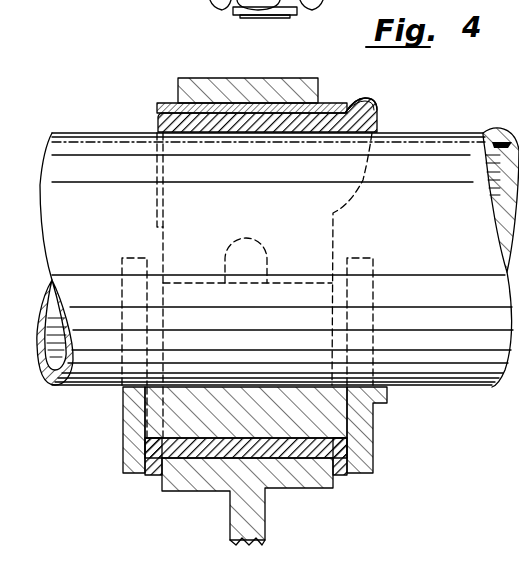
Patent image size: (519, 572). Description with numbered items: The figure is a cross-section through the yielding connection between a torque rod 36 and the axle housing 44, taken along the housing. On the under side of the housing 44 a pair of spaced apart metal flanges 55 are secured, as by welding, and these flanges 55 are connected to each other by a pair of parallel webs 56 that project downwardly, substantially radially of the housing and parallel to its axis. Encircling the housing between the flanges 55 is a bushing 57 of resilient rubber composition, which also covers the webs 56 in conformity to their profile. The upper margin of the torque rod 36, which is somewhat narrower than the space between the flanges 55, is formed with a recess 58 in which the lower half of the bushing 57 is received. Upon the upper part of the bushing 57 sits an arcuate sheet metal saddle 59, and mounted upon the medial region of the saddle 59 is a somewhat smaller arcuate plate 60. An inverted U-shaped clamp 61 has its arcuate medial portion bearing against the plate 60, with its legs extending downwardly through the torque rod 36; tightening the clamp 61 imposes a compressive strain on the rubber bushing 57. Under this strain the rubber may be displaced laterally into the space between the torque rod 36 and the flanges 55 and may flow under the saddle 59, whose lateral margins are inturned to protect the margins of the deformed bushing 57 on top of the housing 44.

The tube 44 is at (453, 133).
The metal flange 55 is at (122, 420).
The web 56 is at (316, 478).
The bushing 57 is at (155, 118).
The recess 58 is at (300, 440).
The saddle 59 is at (346, 106).
The arcuate plate 60 is at (333, 102).
The clamp 61 is at (250, 60).
The torque rod 36 is at (203, 488).